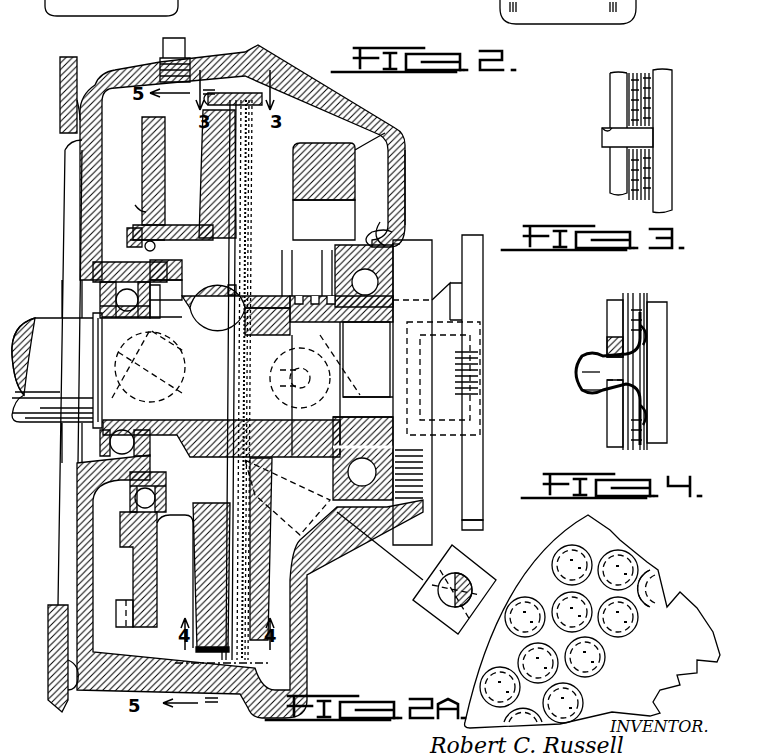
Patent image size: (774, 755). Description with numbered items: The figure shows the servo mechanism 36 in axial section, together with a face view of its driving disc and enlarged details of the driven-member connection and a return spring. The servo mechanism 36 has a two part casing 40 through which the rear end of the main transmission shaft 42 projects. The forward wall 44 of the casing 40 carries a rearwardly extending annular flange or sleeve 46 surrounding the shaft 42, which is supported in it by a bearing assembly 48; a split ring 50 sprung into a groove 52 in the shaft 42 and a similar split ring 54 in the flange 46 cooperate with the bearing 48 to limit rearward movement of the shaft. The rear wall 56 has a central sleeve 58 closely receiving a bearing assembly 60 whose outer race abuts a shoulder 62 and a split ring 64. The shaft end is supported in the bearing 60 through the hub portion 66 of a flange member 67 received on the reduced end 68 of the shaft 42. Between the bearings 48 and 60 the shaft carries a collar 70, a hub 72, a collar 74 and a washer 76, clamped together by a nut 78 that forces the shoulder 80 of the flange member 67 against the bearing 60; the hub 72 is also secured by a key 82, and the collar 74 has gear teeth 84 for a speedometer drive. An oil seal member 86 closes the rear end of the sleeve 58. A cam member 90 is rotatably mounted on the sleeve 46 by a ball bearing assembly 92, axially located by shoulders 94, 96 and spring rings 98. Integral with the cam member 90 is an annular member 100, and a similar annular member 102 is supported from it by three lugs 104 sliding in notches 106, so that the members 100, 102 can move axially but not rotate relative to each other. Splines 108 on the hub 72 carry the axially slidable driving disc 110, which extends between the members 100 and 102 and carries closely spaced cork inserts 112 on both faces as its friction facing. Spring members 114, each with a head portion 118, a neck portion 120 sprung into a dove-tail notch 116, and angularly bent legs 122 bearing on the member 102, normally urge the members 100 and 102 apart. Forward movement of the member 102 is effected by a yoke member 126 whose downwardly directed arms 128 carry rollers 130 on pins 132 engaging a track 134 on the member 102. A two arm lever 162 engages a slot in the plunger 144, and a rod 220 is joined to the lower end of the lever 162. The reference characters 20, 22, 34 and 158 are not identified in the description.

In FIG. 2, the cab structure 20 is at (124, 8).
In FIG. 2, the frame member 22 is at (636, 14).
In FIG. 2, the mounting flange 34 is at (60, 80).
In FIG. 2, the servo mechanism 36 is at (302, 54).
In FIG. 2, the two part casing 40 is at (142, 62).
In FIG. 2, the main transmission shaft 42 is at (93, 380).
In FIG. 2, the forward wall 44 is at (86, 203).
In FIG. 2, the annular flange or sleeve 46 is at (100, 290).
In FIG. 2, the bearing assembly 48 is at (100, 306).
In FIG. 2, the split ring 50 is at (93, 318).
In FIG. 2, the groove 52 is at (93, 350).
In FIG. 2, the split ring 54 is at (177, 289).
In FIG. 2, the rear wall 56 is at (406, 170).
In FIG. 2, the annular flange portion or sleeve 58 is at (378, 232).
In FIG. 2, the bearing assembly 60 is at (392, 240).
In FIG. 2, the shoulder 62 is at (398, 246).
In FIG. 2, the split ring 64 is at (332, 250).
In FIG. 2, the hub portion 66 is at (368, 383).
In FIG. 2, the flange member 67 is at (484, 290).
In FIG. 2, the reduced end 68 is at (290, 404).
In FIG. 2, the collar 70 is at (148, 322).
In FIG. 2, the hub 72 is at (236, 310).
In FIG. 2, the collar 74 is at (299, 388).
In FIG. 2, the washer 76 is at (345, 322).
In FIG. 2, the nut 78 is at (462, 410).
In FIG. 2, the shoulder 80 is at (363, 427).
In FIG. 2, the key 82 is at (240, 356).
In FIG. 2, the gear teeth 84 is at (300, 296).
In FIG. 2, the oil seal member 86 is at (421, 392).
In FIG. 2, the cam member 90 is at (144, 152).
In FIG. 2, the ball bearing assembly 92 is at (133, 230).
In FIG. 2, the shoulder 94 is at (172, 222).
In FIG. 2, the shoulder 96 is at (93, 268).
In FIG. 2, the spring rings 98 is at (140, 210).
In FIG. 2, the annular member 100 is at (205, 152).
In FIG. 3, the annular member 100 is at (610, 80).
In FIG. 4, the annular member 100 is at (607, 308).
In FIG. 2, the annular member 102 is at (268, 140).
In FIG. 3, the annular member 102 is at (662, 100).
In FIG. 4, the annular member 102 is at (660, 320).
In FIG. 2, the lugs 104 is at (262, 92).
In FIG. 3, the lugs 104 is at (602, 140).
In FIG. 2, the notch 106 is at (225, 93).
In FIG. 3, the notch 106 is at (606, 130).
In FIG. 2, the splines 108 is at (230, 288).
In FIG. 2, the driving disc 110 is at (248, 256).
In FIG. 3, the driving disc 110 is at (640, 165).
In FIG. 4, the driving disc 110 is at (640, 292).
In FIG. 2A, the driving disc 110 is at (478, 678).
In FIG. 2, the cork inserts 112 is at (238, 172).
In FIG. 3, the cork inserts 112 is at (646, 190).
In FIG. 4, the cork inserts 112 is at (628, 294).
In FIG. 2, the spring members 114 is at (212, 652).
In FIG. 4, the spring members 114 is at (572, 369).
In FIG. 2, the notch 116 is at (222, 660).
In FIG. 4, the notch 116 is at (598, 388).
In FIG. 4, the head portion 118 is at (600, 372).
In FIG. 4, the neck portion 120 is at (600, 354).
In FIG. 4, the legs 122 is at (645, 338).
In FIG. 2, the yoke member 126 is at (395, 130).
In FIG. 2, the arms 128 is at (366, 359).
In FIG. 2, the roller 130 is at (278, 372).
In FIG. 2, the pin 132 is at (278, 388).
In FIG. 2, the track 134 is at (296, 150).
In FIG. 2, the plunger 144 is at (90, 408).
In FIG. 2, the lower support 158 is at (118, 600).
In FIG. 2, the two arm lever 162 is at (405, 568).
In FIG. 2, the rod 220 is at (470, 570).